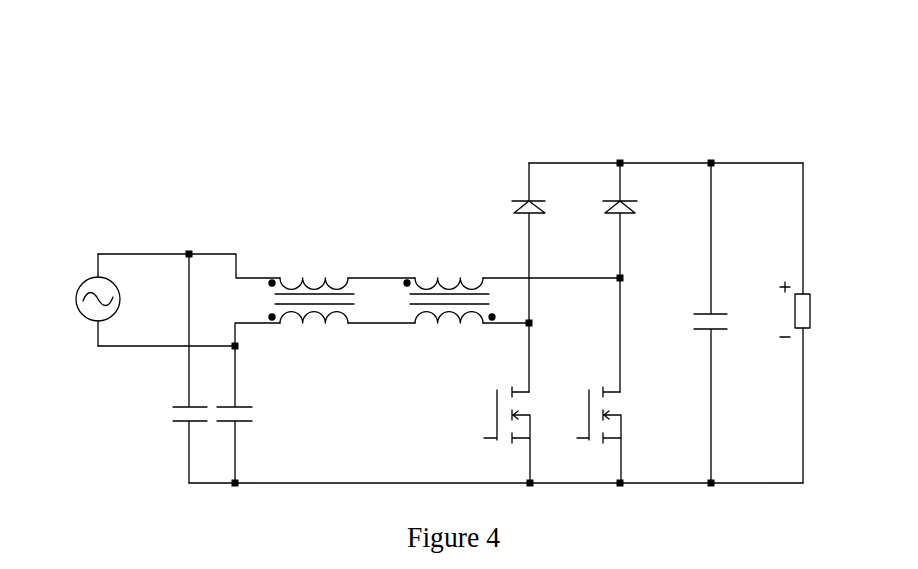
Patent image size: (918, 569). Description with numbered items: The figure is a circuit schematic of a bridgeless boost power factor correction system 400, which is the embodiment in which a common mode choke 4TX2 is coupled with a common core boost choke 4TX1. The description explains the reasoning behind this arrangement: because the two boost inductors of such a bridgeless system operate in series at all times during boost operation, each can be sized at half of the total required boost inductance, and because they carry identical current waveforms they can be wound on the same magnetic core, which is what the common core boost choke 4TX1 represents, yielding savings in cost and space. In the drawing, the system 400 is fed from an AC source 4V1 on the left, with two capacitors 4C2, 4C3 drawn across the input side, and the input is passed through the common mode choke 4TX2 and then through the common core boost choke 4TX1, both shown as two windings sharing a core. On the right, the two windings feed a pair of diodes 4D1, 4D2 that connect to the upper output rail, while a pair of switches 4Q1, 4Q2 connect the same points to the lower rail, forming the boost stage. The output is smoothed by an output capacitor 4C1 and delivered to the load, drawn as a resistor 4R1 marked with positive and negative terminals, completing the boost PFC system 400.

The bridgeless boost PFC system 400 is at (614, 120).
The AC source 4V1 is at (73, 318).
The common mode choke 4TX2 is at (311, 283).
The common core boost choke 4TX1 is at (449, 283).
The diode 4D1 is at (549, 277).
The diode 4D2 is at (640, 277).
The output capacitor 4C1 is at (732, 323).
The load resistor 4R1 is at (830, 323).
The capacitor 4C2 is at (167, 368).
The capacitor 4C3 is at (257, 414).
The MOSFET switch 4Q1 is at (506, 435).
The MOSFET switch 4Q2 is at (597, 435).